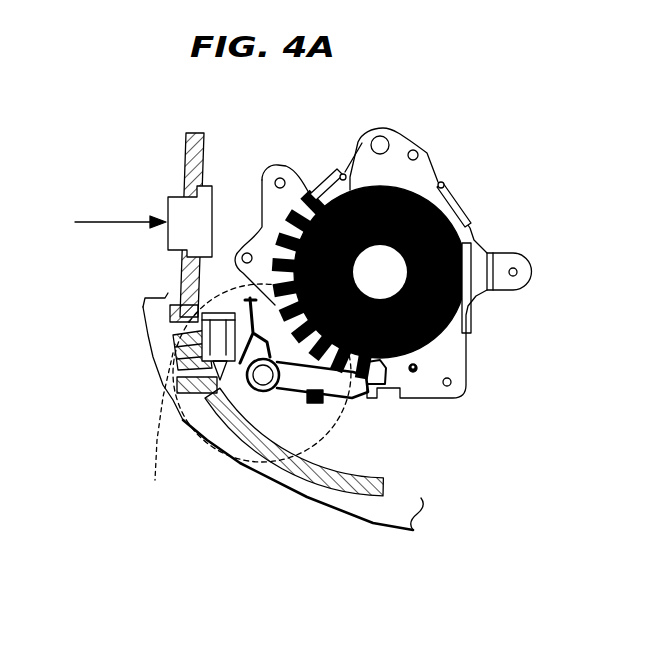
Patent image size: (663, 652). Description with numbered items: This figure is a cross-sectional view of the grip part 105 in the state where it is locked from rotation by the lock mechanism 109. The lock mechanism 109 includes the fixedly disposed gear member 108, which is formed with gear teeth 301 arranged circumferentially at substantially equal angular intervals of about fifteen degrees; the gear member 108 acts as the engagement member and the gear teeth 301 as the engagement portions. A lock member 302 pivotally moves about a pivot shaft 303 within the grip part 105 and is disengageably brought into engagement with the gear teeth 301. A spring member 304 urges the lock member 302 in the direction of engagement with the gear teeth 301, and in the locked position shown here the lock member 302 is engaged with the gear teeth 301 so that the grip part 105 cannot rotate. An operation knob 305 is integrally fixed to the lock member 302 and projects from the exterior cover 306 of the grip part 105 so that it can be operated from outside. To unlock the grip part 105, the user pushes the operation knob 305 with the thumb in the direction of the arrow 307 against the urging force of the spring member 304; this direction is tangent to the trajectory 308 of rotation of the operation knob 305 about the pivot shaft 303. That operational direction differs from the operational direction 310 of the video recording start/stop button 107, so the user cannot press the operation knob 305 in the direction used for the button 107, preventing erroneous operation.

The grip part 105 is at (300, 480).
The video recording start/stop button 107 is at (183, 210).
The gear member 108 is at (433, 333).
The lock mechanism 109 is at (353, 420).
The gear teeth 301 is at (386, 368).
The lock member 302 is at (356, 400).
The pivot shaft 303 is at (262, 380).
The spring member 304 is at (300, 400).
The operation knob 305 is at (172, 342).
The exterior cover 306 is at (145, 307).
The arrow 307 is at (145, 418).
The trajectory 308 is at (166, 366).
The operational direction 310 is at (108, 192).